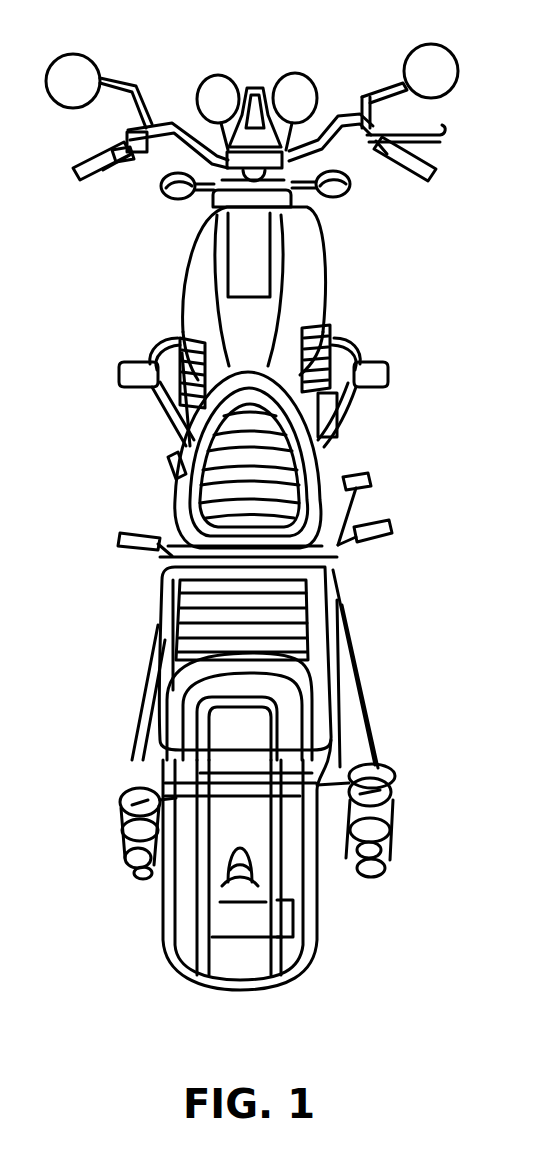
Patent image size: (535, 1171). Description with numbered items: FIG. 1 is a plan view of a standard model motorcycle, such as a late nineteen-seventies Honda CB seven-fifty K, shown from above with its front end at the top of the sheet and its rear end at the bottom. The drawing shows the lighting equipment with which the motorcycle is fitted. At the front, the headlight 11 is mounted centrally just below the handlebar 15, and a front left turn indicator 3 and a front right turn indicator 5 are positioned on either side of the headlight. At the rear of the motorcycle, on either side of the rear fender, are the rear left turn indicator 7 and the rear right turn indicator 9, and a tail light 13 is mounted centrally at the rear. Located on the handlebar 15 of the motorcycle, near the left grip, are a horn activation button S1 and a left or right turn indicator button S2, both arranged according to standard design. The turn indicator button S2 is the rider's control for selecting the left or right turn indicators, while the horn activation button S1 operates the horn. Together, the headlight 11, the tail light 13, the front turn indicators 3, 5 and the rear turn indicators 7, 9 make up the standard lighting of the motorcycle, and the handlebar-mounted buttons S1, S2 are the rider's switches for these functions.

The front left turn indicator 3 is at (170, 196).
The front right turn indicator 5 is at (340, 195).
The rear left turn indicator 7 is at (130, 808).
The rear right turn indicator 9 is at (380, 790).
The headlight 11 is at (298, 150).
The tail light 13 is at (236, 917).
The handlebar 15 is at (175, 125).
The horn activation button S1 is at (128, 164).
The left or right turn indicator button S2 is at (124, 132).